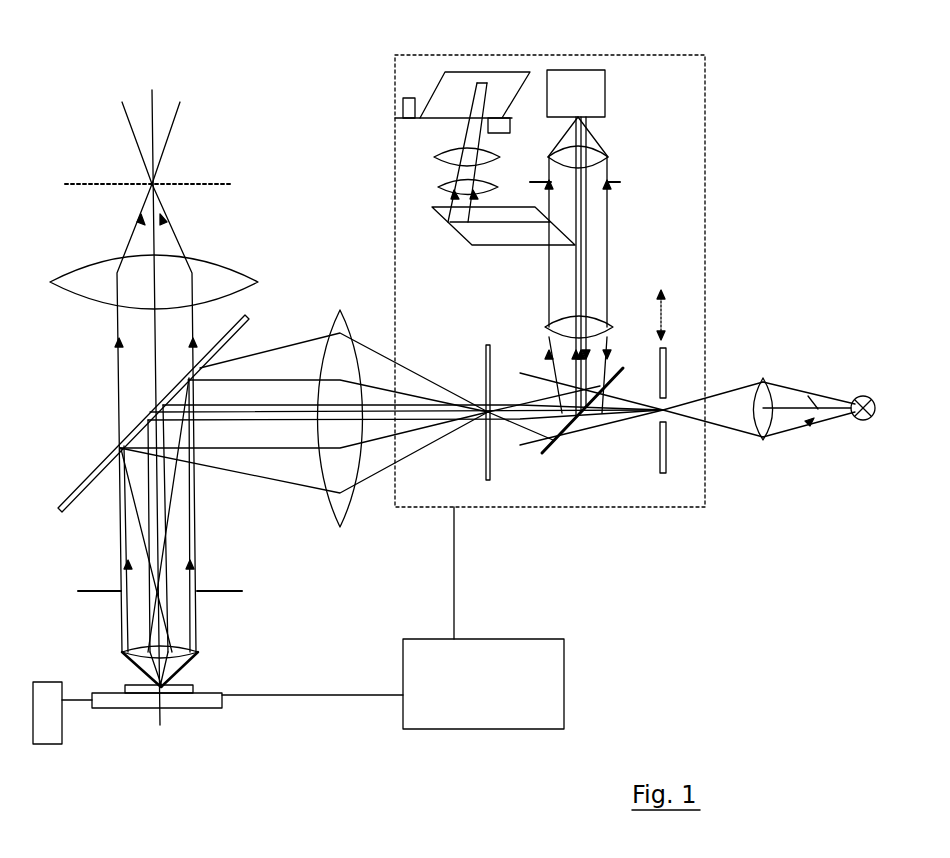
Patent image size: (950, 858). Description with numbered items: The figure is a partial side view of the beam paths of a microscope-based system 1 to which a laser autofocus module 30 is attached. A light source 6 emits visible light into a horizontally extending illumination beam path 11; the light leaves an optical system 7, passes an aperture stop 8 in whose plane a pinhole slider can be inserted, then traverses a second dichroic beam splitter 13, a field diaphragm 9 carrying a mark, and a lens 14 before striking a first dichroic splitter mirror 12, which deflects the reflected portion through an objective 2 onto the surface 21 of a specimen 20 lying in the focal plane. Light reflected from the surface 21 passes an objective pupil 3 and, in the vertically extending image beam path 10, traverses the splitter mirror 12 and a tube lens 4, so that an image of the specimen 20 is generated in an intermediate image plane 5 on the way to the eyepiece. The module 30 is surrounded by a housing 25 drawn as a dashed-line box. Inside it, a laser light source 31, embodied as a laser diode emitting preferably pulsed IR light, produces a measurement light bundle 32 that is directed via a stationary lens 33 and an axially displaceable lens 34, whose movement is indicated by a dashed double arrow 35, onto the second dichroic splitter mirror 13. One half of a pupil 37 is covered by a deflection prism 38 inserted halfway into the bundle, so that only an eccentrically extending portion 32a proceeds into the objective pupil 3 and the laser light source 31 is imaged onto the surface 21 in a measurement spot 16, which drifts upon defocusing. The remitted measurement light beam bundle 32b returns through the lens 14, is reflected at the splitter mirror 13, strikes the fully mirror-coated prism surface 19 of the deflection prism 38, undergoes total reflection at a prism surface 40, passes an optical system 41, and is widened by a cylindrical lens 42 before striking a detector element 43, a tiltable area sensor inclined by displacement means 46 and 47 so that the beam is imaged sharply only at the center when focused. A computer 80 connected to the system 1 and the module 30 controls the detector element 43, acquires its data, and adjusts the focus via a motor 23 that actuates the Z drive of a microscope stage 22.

The microscope-based system 1 is at (292, 212).
The objective 2 is at (122, 656).
The objective pupil 3 is at (82, 593).
The tube lens 4 is at (64, 283).
The intermediate image plane 5 is at (82, 184).
The light source 6 is at (866, 421).
The optical system 7 is at (763, 381).
The aperture stop 8 is at (667, 466).
The field diaphragm 9 is at (486, 350).
The image beam path 10 is at (153, 243).
The illumination beam path 11 is at (811, 396).
The dichroic splitter mirror 12 is at (80, 492).
The second dichroic beam splitter 13 is at (545, 452).
The lens 14 is at (345, 512).
The measurement spot 16 is at (165, 697).
The fully mirror-coated prism surface 19 is at (548, 200).
The specimen 20 is at (135, 688).
The surface 21 is at (188, 682).
The microscope stage 22 is at (140, 708).
The motor 23 is at (33, 736).
The housing 25 is at (705, 277).
The module 30 is at (684, 99).
The laser light source 31 is at (596, 108).
The measurement light bundle 32 is at (577, 220).
The eccentrically extending measurement light bundle 32a is at (122, 563).
The remitted measurement light beam bundle 32b is at (190, 562).
The stationary lens 33 is at (628, 162).
The lens 34 is at (548, 327).
The dashed double arrow 35 is at (660, 326).
The pupil 37 is at (622, 182).
The deflection prism 38 is at (450, 240).
The prism surface 40 is at (440, 215).
The optical system 41 is at (445, 185).
The cylindrical lens 42 is at (455, 152).
The detector element 43 is at (447, 80).
The displacement means 46 is at (403, 108).
The displacement means 47 is at (505, 133).
The computer 80 is at (548, 705).